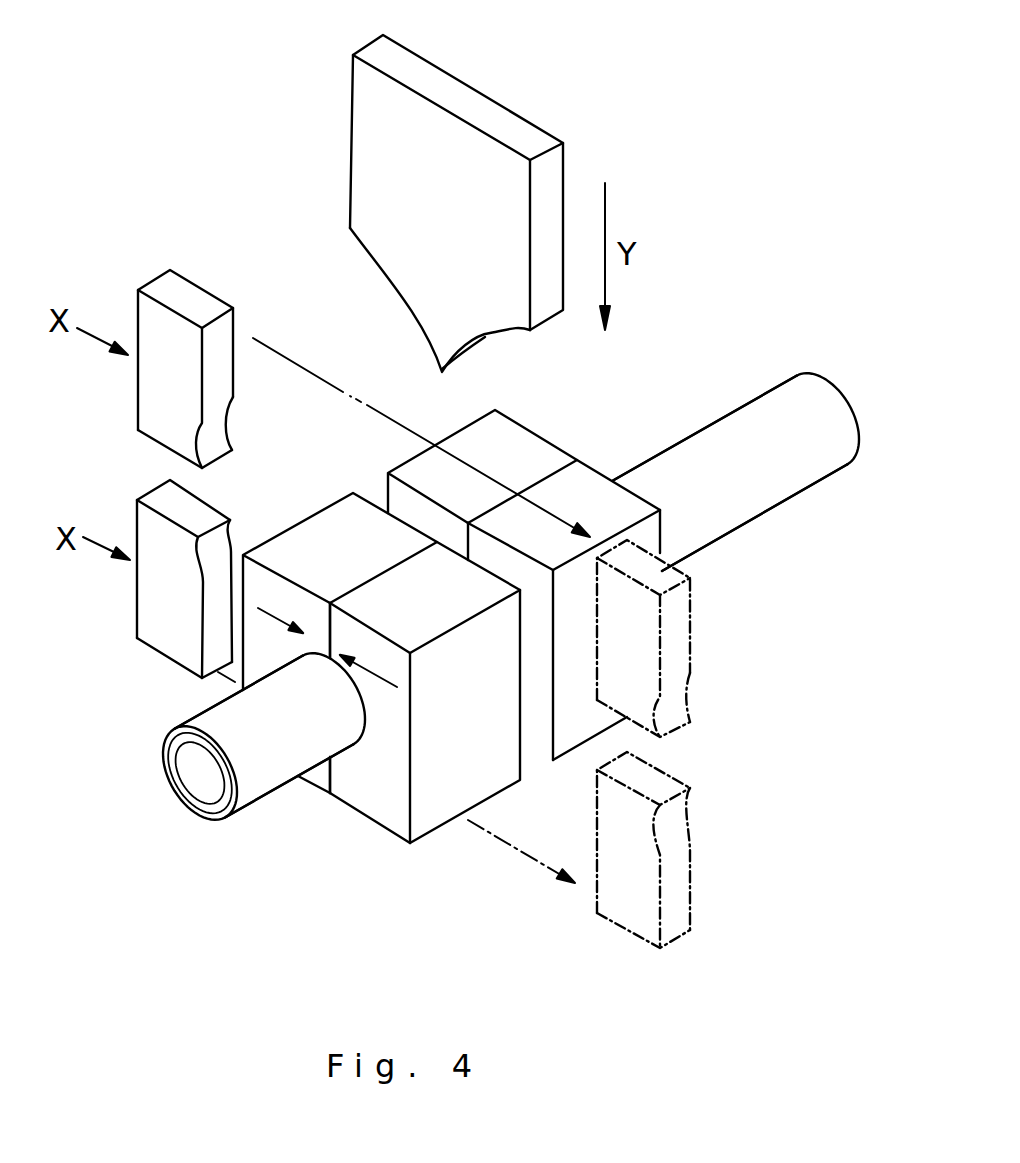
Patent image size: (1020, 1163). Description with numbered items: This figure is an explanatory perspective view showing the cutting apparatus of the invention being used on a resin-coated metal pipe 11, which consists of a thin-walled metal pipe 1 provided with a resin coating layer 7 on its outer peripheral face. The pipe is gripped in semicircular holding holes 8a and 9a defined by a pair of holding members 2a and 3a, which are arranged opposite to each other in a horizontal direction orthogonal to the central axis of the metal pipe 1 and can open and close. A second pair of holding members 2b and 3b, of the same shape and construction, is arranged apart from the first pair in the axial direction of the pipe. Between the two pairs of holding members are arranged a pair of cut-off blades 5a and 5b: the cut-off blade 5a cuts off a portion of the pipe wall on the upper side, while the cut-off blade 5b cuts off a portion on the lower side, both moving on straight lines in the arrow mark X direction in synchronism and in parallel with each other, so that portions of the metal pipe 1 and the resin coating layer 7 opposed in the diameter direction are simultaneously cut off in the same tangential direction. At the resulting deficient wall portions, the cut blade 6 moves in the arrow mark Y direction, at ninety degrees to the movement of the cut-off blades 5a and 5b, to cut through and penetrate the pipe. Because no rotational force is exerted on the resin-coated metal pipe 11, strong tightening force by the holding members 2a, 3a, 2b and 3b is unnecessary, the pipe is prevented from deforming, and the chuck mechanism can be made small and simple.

The metal pipe 1 is at (165, 742).
The holding member 2a is at (337, 537).
The holding member 2b is at (423, 482).
The holding member 3a is at (430, 817).
The holding member 3b is at (632, 503).
The cut-off blade 5a is at (150, 325).
The cut-off blade 5b is at (140, 537).
The cut blade 6 is at (453, 158).
The resin coating layer 7 is at (221, 822).
The semicircular holding hole 8a is at (363, 725).
The semicircular holding hole 9a is at (326, 660).
The resin-coated metal pipe 11 is at (185, 813).